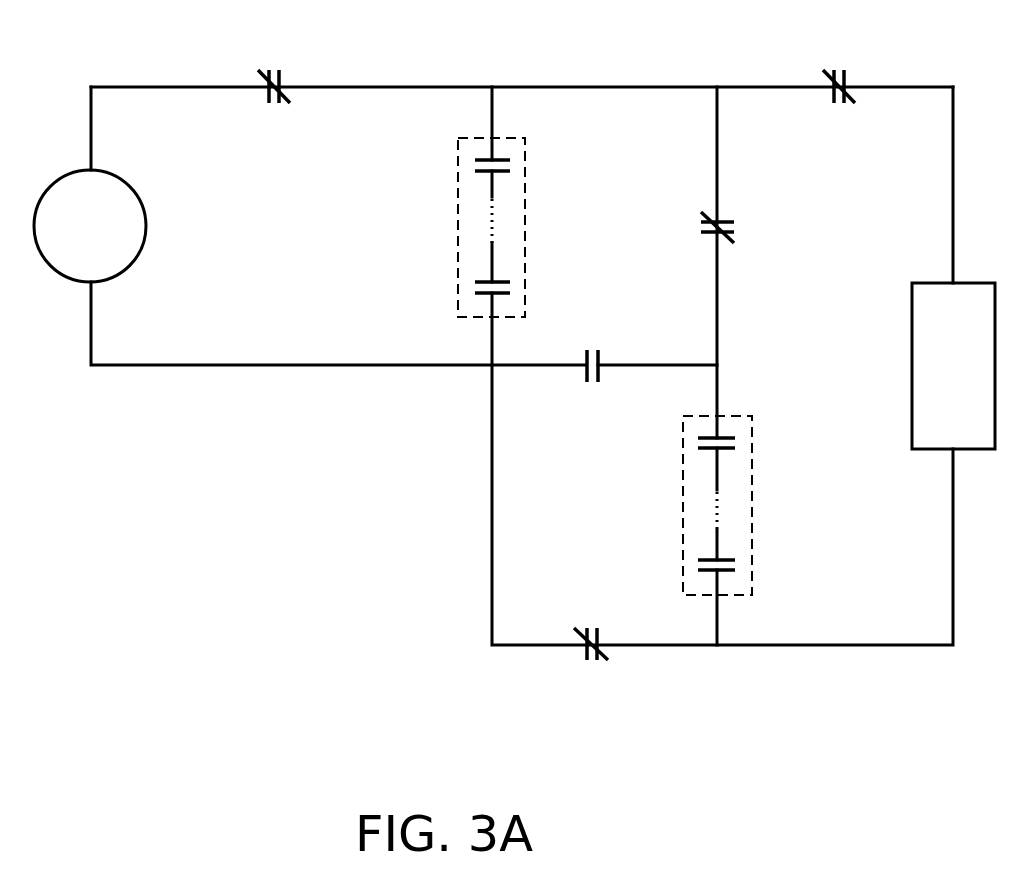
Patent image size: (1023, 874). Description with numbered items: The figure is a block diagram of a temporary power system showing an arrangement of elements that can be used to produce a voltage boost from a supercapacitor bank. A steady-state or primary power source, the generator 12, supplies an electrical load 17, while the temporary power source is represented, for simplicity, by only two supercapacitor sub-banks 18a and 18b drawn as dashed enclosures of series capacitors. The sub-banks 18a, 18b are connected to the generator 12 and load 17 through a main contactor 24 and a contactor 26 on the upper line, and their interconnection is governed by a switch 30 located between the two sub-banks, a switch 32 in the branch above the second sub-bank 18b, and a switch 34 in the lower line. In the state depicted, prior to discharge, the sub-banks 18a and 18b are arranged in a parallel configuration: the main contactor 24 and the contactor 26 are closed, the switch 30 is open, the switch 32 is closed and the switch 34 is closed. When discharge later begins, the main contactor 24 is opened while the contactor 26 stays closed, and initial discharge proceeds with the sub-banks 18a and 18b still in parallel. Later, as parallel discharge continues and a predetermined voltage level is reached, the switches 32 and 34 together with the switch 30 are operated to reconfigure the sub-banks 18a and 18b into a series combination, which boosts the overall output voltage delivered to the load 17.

The generator 12 is at (62, 174).
The electrical load 17 is at (912, 322).
The supercapacitor sub-bank 18a is at (458, 245).
The supercapacitor sub-bank 18b is at (683, 505).
The main contactor 24 is at (274, 70).
The contactor 26 is at (838, 70).
The switch 30 is at (593, 350).
The switch 32 is at (735, 229).
The switch 34 is at (593, 664).